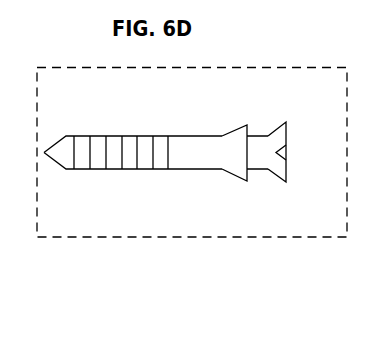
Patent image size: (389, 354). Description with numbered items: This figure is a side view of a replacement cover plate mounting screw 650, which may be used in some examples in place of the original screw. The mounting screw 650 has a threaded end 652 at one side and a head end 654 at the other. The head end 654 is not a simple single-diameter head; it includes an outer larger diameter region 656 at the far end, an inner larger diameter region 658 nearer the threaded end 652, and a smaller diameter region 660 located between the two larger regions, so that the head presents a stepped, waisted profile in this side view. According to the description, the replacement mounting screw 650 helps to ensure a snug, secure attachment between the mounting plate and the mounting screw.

The replacement mounting screw 650 is at (173, 237).
The threaded end 652 is at (72, 136).
The head end 654 is at (271, 136).
The outer larger diameter region 656 is at (283, 163).
The inner larger diameter region 658 is at (238, 176).
The smaller diameter region 660 is at (257, 170).